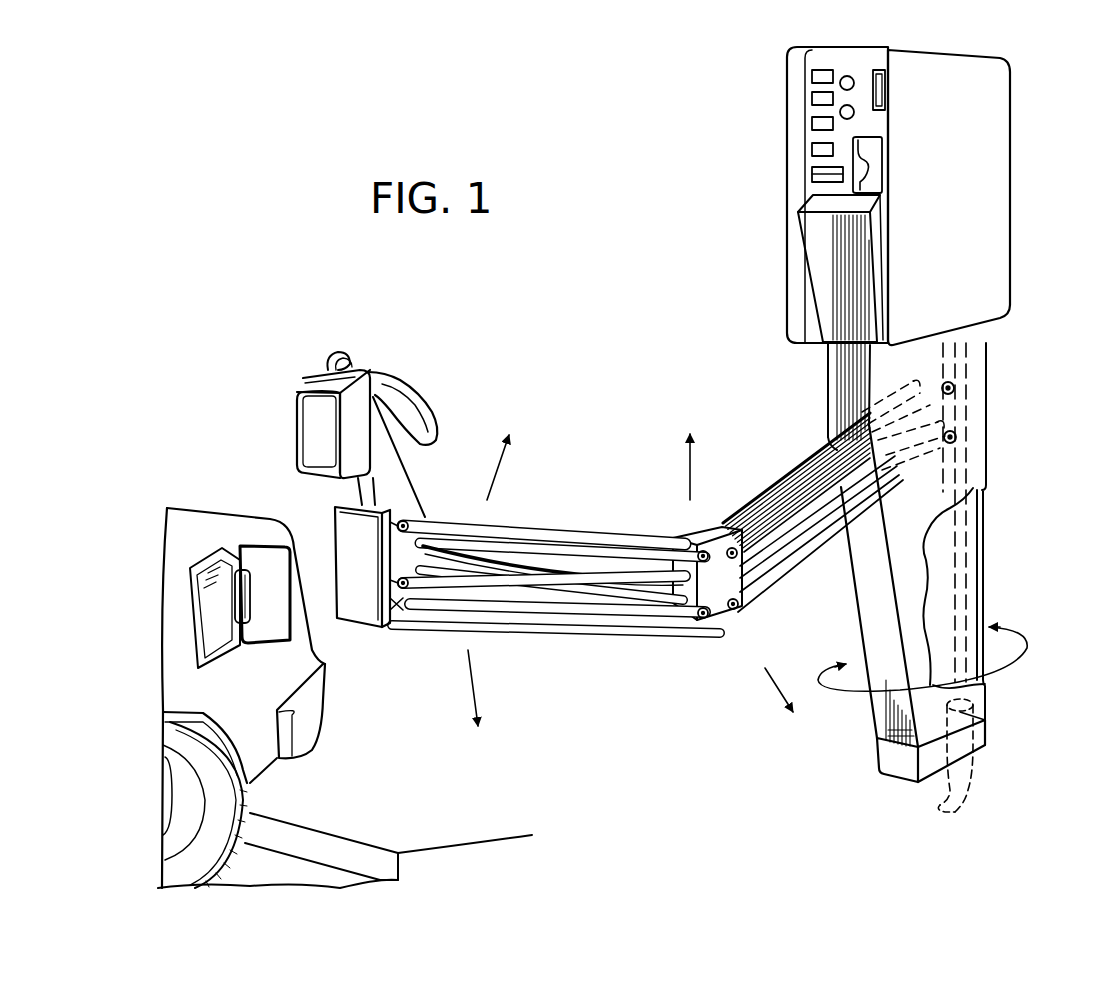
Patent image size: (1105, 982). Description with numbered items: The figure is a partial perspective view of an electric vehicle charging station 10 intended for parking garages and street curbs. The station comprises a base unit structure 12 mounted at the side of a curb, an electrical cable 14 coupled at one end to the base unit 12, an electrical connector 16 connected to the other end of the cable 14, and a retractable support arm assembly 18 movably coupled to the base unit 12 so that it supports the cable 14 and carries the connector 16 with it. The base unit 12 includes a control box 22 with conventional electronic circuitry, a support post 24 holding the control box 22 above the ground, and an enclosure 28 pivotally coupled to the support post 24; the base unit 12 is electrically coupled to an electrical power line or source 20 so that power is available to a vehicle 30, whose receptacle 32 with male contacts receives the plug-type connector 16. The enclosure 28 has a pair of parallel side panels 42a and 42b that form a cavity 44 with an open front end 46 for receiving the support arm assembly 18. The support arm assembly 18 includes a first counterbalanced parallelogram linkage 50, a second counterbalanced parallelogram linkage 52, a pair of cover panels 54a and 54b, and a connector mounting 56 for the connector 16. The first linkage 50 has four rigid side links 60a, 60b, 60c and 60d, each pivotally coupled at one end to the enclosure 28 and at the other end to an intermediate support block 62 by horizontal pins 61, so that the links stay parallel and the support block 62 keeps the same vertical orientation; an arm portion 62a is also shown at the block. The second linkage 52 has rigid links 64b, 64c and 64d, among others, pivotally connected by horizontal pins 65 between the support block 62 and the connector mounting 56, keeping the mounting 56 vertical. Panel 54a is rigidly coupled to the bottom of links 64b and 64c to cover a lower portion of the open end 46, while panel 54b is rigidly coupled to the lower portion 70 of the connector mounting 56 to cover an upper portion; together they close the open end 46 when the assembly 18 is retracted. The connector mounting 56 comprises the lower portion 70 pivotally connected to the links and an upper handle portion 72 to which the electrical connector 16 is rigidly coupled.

The electric vehicle charging station 10 is at (636, 332).
The base unit structure 12 is at (744, 349).
The electrical cable 14 is at (544, 651).
The electrical connector 16 is at (285, 381).
The retractable support arm assembly 18 is at (678, 486).
The electrical power line or source 20 is at (966, 783).
The control box 22 is at (1010, 142).
The support post 24 is at (982, 551).
The enclosure 28 is at (872, 737).
The vehicle 30 is at (197, 507).
The mating electrical connector or receptacle 32 is at (237, 567).
The side panel 42a is at (826, 370).
The side panel 42b is at (827, 381).
The cavity 44 is at (932, 549).
The open front end 46 is at (884, 696).
The first counterbalanced parallelogram linkage 50 is at (785, 425).
The second counterbalanced parallelogram linkage 52 is at (559, 517).
The cover panel 54a is at (420, 637).
The cover panel 54b is at (352, 612).
The connector mounting 56 is at (398, 372).
The side link 60a is at (795, 468).
The side link 60b is at (797, 495).
The side link 60c is at (772, 528).
The side link 60d is at (766, 577).
The horizontal pin 61 is at (956, 389).
The intermediate support block 62 is at (730, 625).
The arm portion 62a is at (578, 530).
The rigid link 64b is at (553, 585).
The rigid link 64c is at (617, 543).
The rigid link 64d is at (600, 605).
The horizontal pin 65 is at (407, 522).
The lower portion 70 is at (403, 610).
The upper handle portion 72 is at (405, 484).